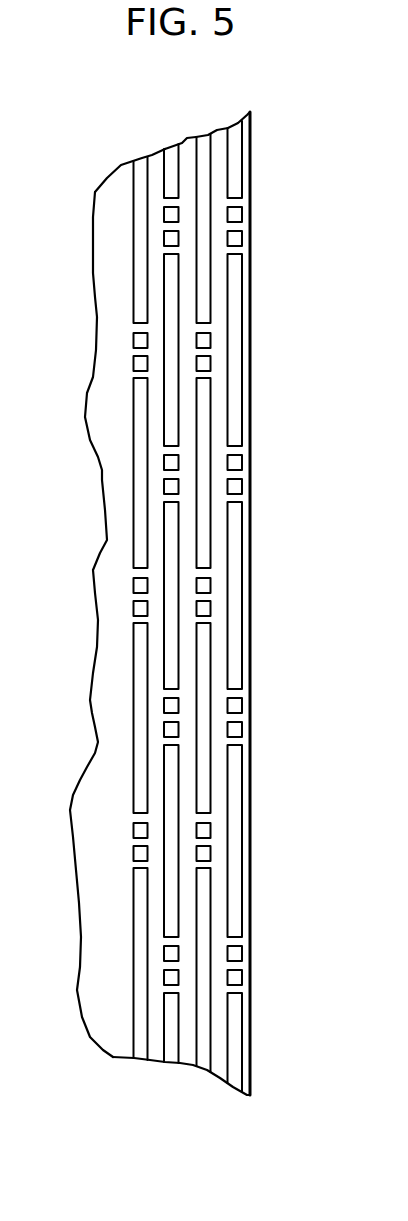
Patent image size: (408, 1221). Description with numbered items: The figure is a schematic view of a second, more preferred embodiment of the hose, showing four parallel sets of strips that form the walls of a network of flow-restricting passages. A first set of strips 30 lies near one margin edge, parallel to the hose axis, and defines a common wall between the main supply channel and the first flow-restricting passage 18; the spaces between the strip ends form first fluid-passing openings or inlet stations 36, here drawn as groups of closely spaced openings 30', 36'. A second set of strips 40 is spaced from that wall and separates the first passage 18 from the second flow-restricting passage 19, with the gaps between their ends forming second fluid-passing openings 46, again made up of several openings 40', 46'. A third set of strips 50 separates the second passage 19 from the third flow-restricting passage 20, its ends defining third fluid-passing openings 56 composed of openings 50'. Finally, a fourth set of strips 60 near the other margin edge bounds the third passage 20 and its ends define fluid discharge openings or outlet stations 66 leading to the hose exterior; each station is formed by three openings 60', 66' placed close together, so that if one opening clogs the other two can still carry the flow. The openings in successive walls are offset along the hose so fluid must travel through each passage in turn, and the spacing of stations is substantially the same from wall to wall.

The first flow-restricting passage 18 is at (157, 153).
The second flow-restricting passage 19 is at (188, 142).
The third flow-restricting passage 20 is at (217, 138).
The first set of strips 30 is at (105, 599).
The first strip openings 30' is at (97, 589).
The first fluid-passing openings 36 is at (82, 620).
The first inlet station openings 36' is at (81, 846).
The second set of strips 40 is at (113, 603).
The second strip openings 40' is at (113, 596).
The second fluid-passing openings 46 is at (101, 699).
The second inlet station openings 46' is at (100, 971).
The third set of strips 50 is at (252, 603).
The third strip openings 50' is at (250, 595).
The third fluid-passing openings 56 is at (220, 594).
The fourth set of strips 60 is at (266, 606).
The fourth strip openings 60' is at (274, 596).
The fluid discharge openings 66 is at (295, 718).
The outlet station openings 66' is at (282, 973).